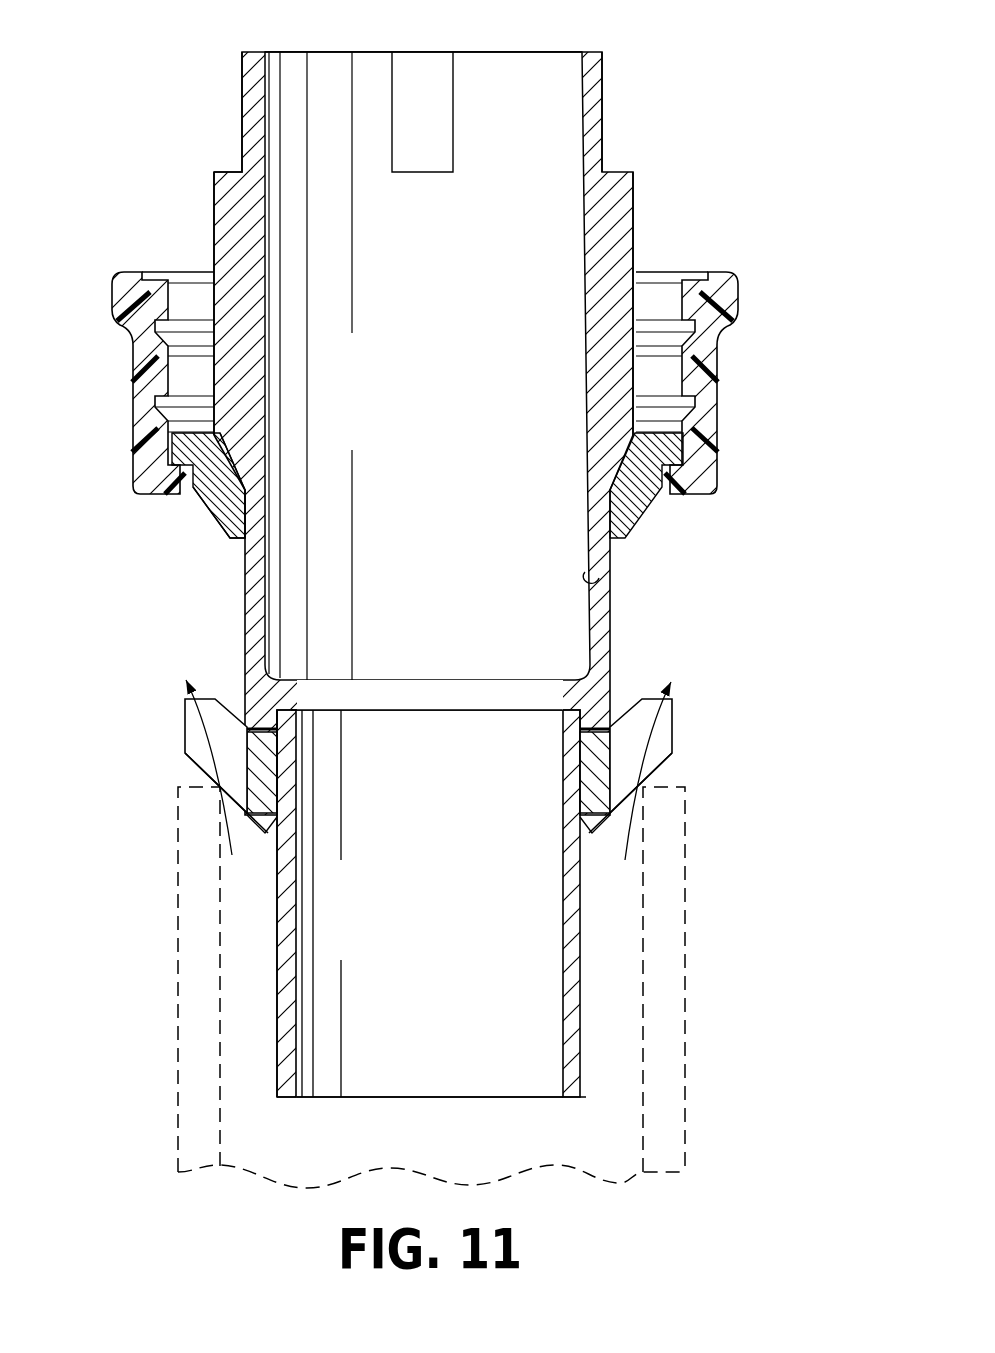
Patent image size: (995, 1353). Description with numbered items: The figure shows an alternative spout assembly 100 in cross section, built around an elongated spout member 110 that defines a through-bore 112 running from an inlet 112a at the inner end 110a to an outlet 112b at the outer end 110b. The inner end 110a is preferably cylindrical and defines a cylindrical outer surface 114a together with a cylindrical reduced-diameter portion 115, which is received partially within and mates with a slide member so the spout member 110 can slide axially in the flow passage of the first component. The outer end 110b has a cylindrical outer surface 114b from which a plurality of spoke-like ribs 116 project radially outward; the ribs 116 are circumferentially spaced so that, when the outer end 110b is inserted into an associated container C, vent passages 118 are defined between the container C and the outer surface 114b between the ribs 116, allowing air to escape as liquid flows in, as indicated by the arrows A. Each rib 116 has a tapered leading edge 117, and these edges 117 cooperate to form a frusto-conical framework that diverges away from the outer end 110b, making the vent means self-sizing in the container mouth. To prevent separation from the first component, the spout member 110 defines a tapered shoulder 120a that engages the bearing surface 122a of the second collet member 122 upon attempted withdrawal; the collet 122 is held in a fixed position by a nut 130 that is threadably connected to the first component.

The spout assembly 100 is at (450, 594).
The spout member 110 is at (605, 652).
The inner end 110a is at (603, 100).
The outer end 110b is at (585, 987).
The through-bore 112 is at (599, 578).
The inlet 112a is at (510, 70).
The outlet 112b is at (565, 1025).
The cylindrical outer surface 114a is at (645, 240).
The cylindrical outer surface 114b is at (275, 990).
The reduced-diameter portion 115 is at (243, 127).
The ribs 116 is at (185, 718).
The tapered leading edge 117 is at (196, 763).
The vent passages 118 is at (242, 730).
The tapered shoulder 120a is at (243, 470).
The second collet member 122 is at (635, 517).
The bearing surface 122a is at (236, 520).
The nut 130 is at (722, 400).
The arrows A is at (238, 826).
The container C is at (692, 957).